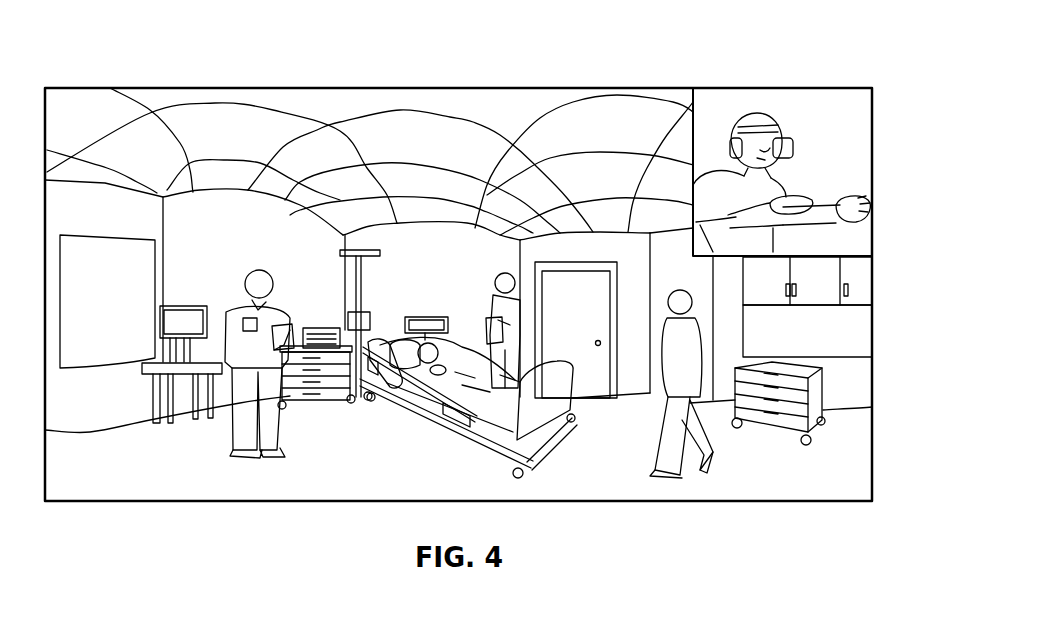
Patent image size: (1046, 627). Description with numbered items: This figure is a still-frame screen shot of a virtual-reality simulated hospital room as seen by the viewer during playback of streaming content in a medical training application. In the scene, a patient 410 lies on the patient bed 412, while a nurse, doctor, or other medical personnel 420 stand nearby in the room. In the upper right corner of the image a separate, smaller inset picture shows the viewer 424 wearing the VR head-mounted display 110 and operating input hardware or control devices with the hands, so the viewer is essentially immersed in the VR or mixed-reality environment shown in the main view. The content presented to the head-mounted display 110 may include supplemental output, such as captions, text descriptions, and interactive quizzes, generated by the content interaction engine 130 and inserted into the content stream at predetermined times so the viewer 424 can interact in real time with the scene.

The head-mounted display 110 is at (795, 153).
The content interaction engine 130 is at (850, 204).
The patient 410 is at (408, 398).
The patient bed 412 is at (540, 408).
The medical personnel 420 is at (243, 418).
The viewer 424 is at (817, 139).